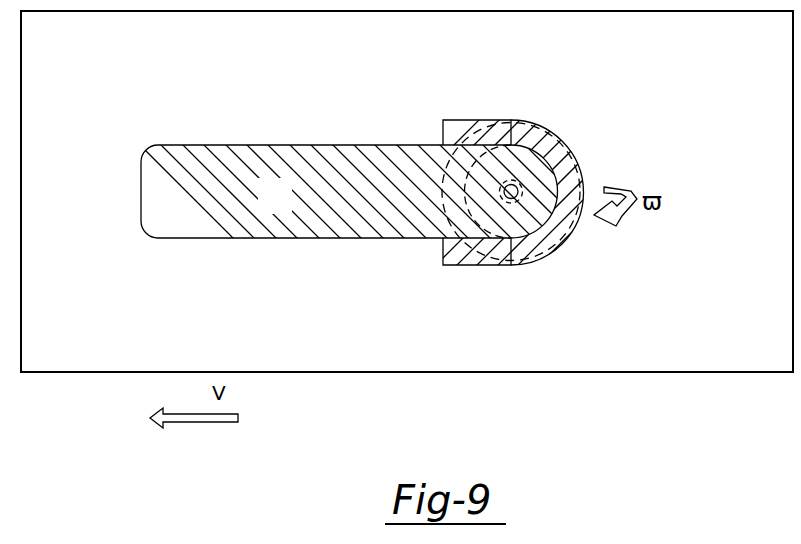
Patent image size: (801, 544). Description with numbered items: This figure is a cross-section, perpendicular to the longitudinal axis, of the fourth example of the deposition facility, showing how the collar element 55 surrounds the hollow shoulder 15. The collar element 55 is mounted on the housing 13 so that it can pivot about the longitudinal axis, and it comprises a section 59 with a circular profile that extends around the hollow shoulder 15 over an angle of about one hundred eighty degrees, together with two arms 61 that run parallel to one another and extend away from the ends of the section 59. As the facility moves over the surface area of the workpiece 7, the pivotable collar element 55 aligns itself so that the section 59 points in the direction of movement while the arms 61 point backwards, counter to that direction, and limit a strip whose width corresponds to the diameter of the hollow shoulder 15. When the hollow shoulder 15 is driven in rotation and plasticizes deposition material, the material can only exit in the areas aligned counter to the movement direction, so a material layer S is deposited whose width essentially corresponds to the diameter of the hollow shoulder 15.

The workpiece 7 is at (692, 101).
The housing 13 is at (540, 257).
The hollow shoulder 15 is at (443, 240).
The collar element 55 is at (548, 127).
The section 59 is at (567, 158).
The arms 61 is at (452, 123).
The material layer S is at (279, 209).